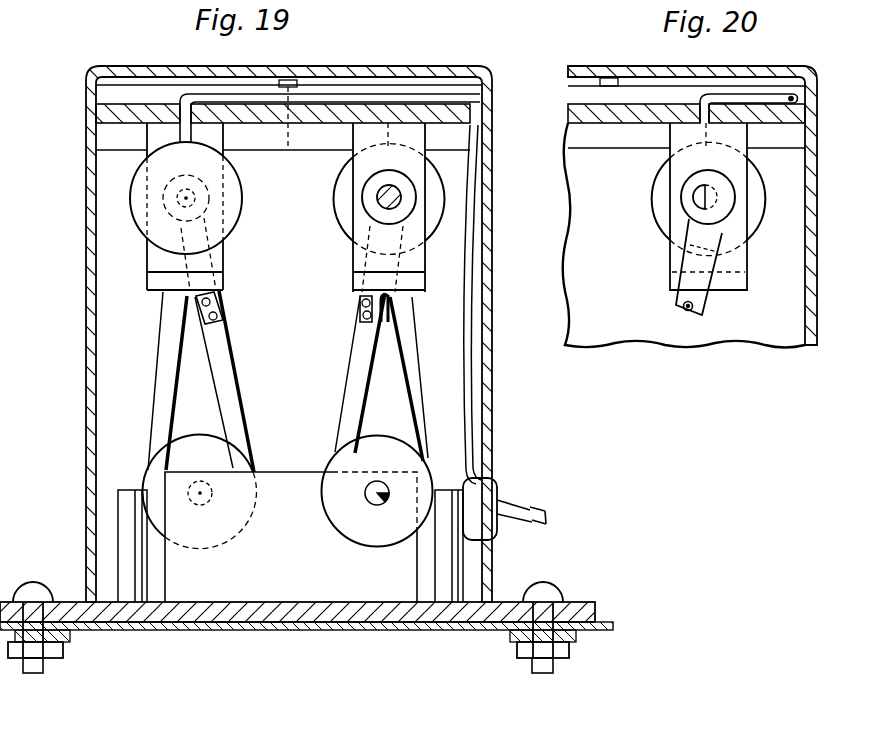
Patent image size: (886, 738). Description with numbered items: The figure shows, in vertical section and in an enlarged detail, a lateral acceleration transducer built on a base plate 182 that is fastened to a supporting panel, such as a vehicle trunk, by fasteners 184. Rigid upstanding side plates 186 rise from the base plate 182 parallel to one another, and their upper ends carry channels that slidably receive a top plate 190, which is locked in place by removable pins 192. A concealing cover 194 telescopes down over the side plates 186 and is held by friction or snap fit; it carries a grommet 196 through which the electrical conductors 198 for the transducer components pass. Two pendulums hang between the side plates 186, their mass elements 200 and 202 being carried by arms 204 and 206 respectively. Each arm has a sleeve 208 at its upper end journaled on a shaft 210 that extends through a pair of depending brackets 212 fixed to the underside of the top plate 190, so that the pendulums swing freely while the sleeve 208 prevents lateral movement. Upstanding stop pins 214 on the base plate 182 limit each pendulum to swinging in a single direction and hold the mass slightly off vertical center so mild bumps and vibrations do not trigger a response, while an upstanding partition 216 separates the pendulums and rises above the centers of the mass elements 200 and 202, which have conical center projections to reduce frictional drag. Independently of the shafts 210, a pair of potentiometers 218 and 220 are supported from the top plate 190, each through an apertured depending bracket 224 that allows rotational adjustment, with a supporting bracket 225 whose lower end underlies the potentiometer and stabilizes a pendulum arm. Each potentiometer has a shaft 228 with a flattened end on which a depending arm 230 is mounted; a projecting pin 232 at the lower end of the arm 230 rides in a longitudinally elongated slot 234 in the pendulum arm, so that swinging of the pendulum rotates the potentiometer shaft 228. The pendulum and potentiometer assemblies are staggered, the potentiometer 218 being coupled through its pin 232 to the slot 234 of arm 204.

In FIG. 19, the base plate 182 is at (577, 610).
In FIG. 19, the fasteners 184 is at (567, 648).
In FIG. 20, the side plates 186 is at (628, 322).
In FIG. 20, the top plate 190 is at (572, 110).
In FIG. 20, the removable pins 192 is at (608, 78).
In FIG. 19, the concealing cover 194 is at (128, 68).
In FIG. 19, the grommet 196 is at (500, 494).
In FIG. 19, the electrical conductors 198 is at (540, 510).
In FIG. 19, the mass element 200 is at (403, 458).
In FIG. 19, the mass element 202 is at (218, 453).
In FIG. 19, the pendulum arm 204 is at (410, 390).
In FIG. 19, the pendulum arm 206 is at (220, 368).
In FIG. 19, the sleeve 208 is at (372, 193).
In FIG. 19, the shaft 210 is at (400, 196).
In FIG. 19, the depending brackets 212 is at (410, 153).
In FIG. 19, the stop pins 214 is at (127, 497).
In FIG. 19, the partition 216 is at (278, 490).
In FIG. 19, the potentiometer 218 is at (430, 211).
In FIG. 20, the potentiometer 218 is at (757, 190).
In FIG. 19, the potentiometer 220 is at (152, 189).
In FIG. 20, the depending bracket 224 is at (672, 160).
In FIG. 19, the supporting bracket 225 is at (168, 254).
In FIG. 20, the supporting bracket 225 is at (723, 263).
In FIG. 20, the potentiometer shaft 228 is at (703, 190).
In FIG. 20, the depending arm 230 is at (700, 273).
In FIG. 20, the projecting pin 232 is at (680, 303).
In FIG. 19, the elongated slot 234 is at (360, 320).